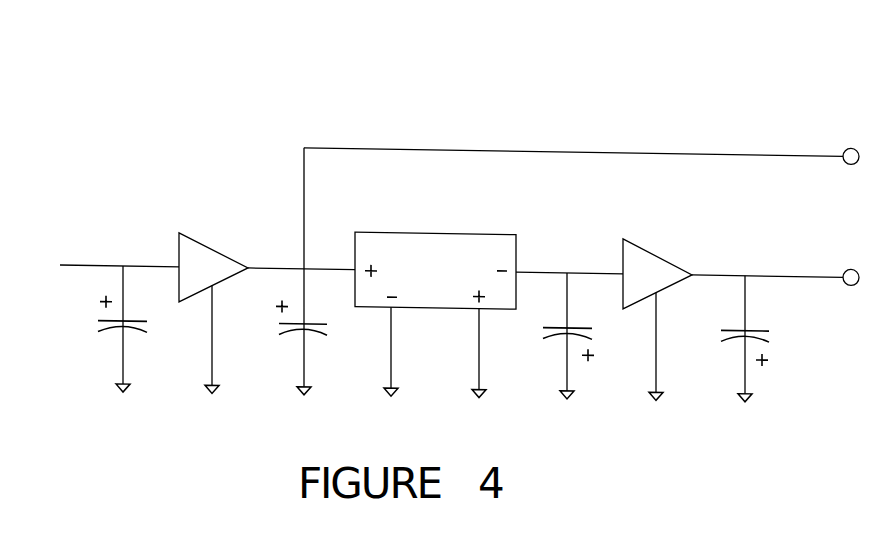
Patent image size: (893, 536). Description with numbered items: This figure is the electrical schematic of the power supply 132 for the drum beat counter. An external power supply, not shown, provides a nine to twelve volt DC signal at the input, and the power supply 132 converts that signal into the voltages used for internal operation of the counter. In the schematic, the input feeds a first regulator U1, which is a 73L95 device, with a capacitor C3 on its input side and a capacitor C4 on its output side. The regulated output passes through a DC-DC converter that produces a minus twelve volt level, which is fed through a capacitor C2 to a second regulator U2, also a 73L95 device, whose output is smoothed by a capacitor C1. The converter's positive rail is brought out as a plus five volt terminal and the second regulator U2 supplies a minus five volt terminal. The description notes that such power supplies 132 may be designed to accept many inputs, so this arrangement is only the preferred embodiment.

The power supply 132 is at (444, 202).
The voltage regulator 73L95 U1 is at (213, 305).
The voltage regulator 73L95 U2 is at (665, 312).
The capacitor 2.2uF C1 is at (740, 338).
The capacitor 2.2uF C2 is at (563, 335).
The capacitor 2.2uF C3 is at (132, 329).
The capacitor 2.2uF C4 is at (307, 330).